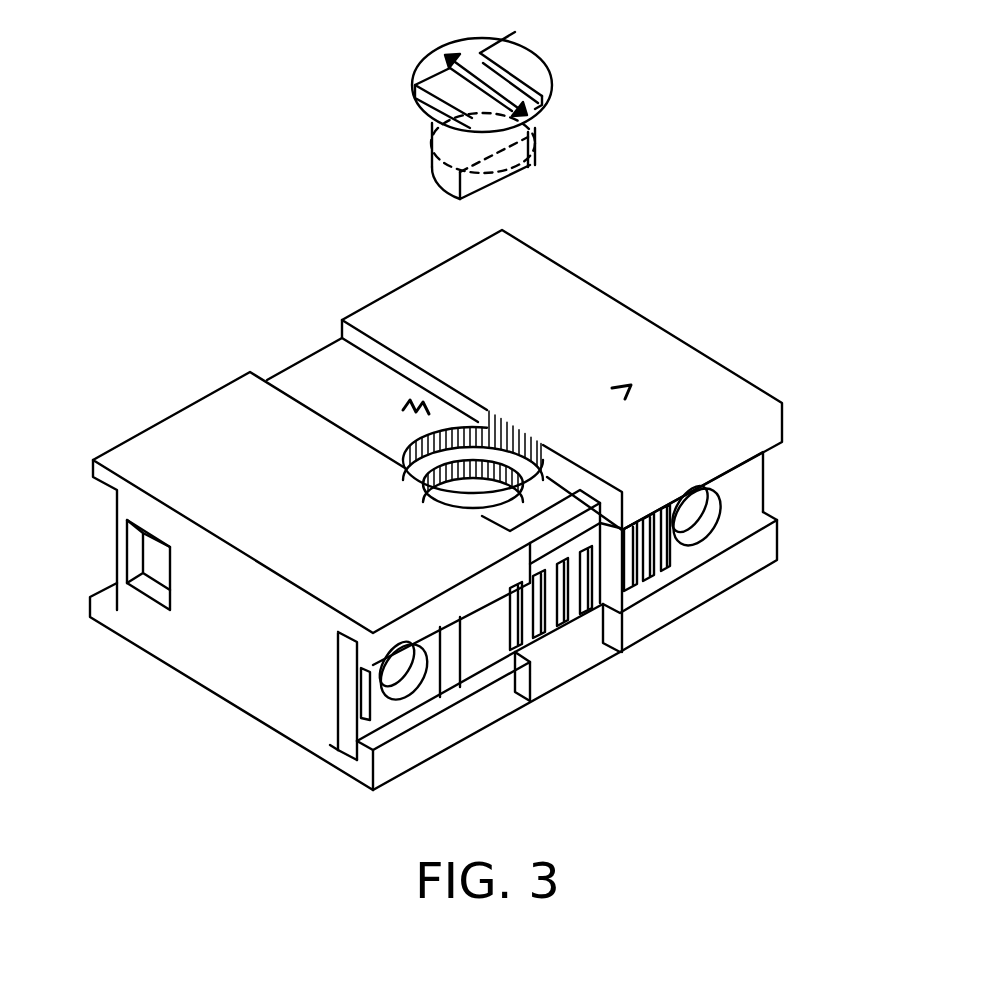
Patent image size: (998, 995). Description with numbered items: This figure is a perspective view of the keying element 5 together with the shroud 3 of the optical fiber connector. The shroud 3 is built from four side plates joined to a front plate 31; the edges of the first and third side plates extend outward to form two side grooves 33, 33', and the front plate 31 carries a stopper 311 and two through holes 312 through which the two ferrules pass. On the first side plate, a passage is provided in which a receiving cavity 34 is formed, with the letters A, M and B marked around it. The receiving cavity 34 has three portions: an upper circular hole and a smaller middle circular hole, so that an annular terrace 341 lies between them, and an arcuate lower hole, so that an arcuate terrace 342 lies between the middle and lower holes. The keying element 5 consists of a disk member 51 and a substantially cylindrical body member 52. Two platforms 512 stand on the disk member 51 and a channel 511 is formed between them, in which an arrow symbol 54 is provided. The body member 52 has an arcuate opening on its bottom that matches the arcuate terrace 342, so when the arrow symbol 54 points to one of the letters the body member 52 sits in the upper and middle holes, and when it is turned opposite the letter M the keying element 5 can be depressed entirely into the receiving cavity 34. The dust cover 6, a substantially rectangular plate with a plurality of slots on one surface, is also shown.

The shroud 3 is at (713, 322).
The front plate 31 is at (455, 737).
The stopper 311 is at (357, 715).
The through holes 312 is at (707, 492).
The side groove 33 is at (229, 696).
The side groove 33' is at (253, 776).
The receiving cavity 34 is at (503, 442).
The annular terrace 341 is at (427, 428).
The arcuate terrace 342 is at (540, 466).
The keying element 5 is at (572, 83).
The disk member 51 is at (433, 118).
The channel 511 is at (540, 107).
The platforms 512 is at (527, 43).
The body member 52 is at (435, 147).
The arrow symbol 54 is at (437, 45).
The dust cover 6 is at (547, 643).